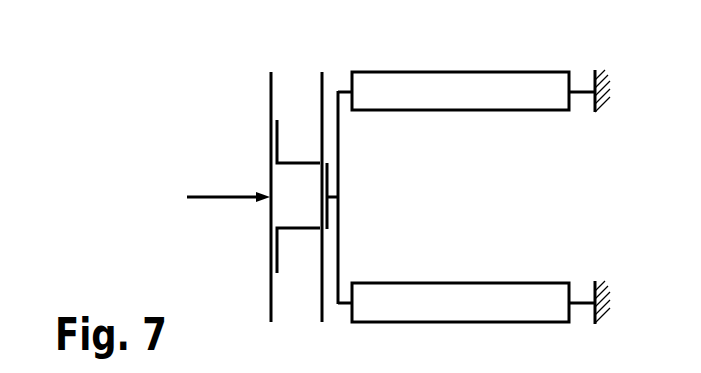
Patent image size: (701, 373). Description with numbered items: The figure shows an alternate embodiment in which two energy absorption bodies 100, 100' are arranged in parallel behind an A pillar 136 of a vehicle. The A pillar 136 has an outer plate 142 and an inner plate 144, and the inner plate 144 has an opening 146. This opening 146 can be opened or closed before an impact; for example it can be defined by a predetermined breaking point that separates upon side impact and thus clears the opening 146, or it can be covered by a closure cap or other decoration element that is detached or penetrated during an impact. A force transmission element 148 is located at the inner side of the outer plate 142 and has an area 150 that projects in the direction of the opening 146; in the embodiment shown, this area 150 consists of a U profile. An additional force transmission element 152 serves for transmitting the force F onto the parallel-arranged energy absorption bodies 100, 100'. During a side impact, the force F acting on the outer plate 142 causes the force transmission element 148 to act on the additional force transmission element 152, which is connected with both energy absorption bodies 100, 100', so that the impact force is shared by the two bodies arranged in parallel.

The energy absorption body 100 is at (481, 56).
The energy absorption body 100' is at (481, 267).
The A pillar 136 is at (304, 285).
The outer plate 142 is at (270, 88).
The inner plate 144 is at (323, 80).
The opening 146 is at (312, 155).
The force transmission element 148 is at (278, 261).
The area 150 is at (299, 230).
The additional force transmission element 152 is at (339, 139).
The force F is at (213, 194).